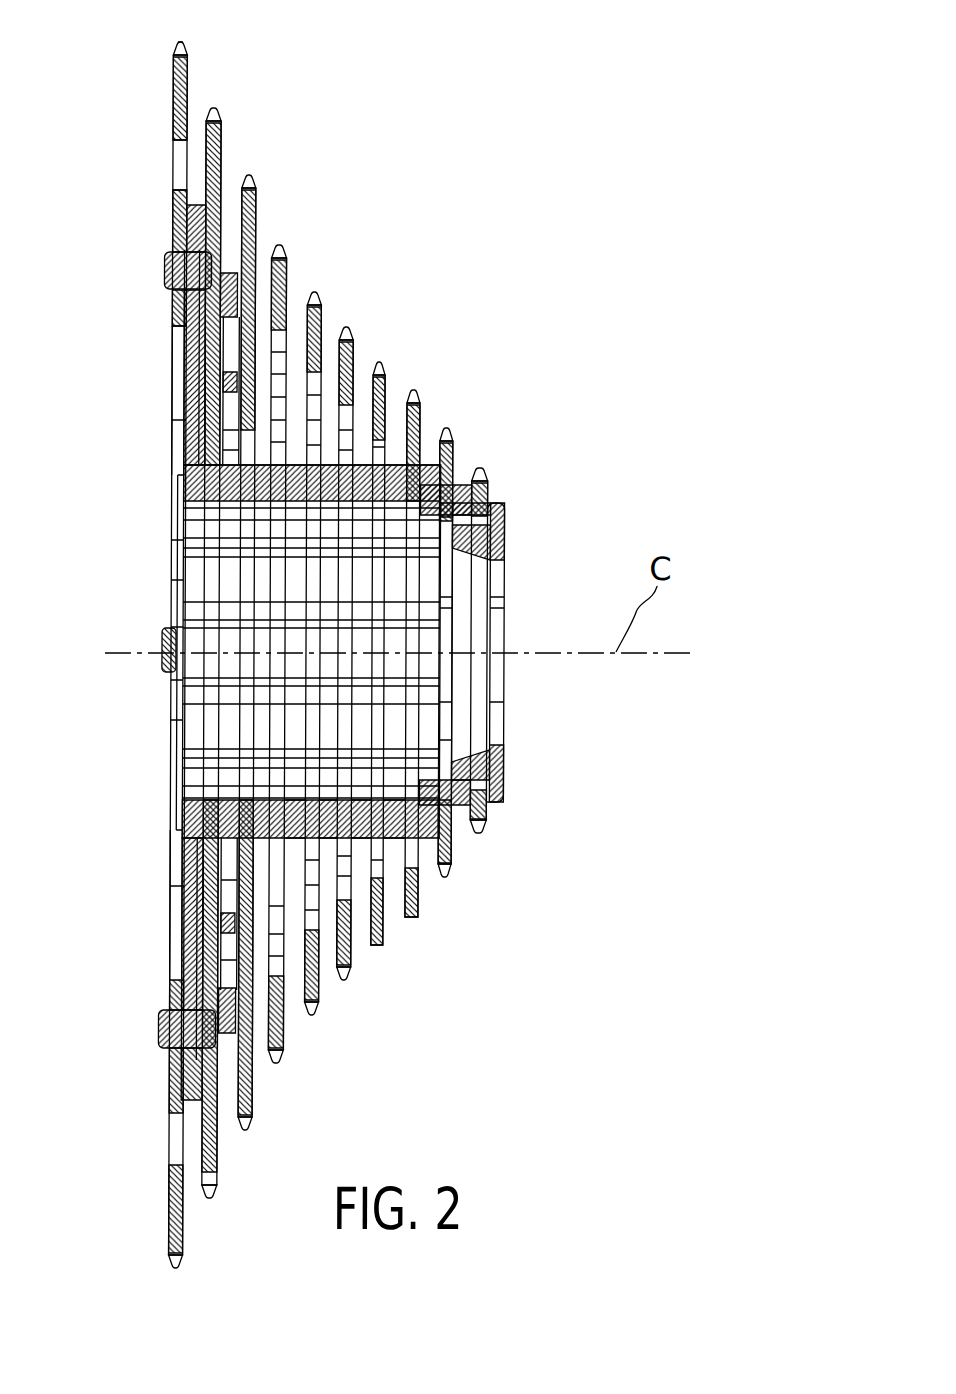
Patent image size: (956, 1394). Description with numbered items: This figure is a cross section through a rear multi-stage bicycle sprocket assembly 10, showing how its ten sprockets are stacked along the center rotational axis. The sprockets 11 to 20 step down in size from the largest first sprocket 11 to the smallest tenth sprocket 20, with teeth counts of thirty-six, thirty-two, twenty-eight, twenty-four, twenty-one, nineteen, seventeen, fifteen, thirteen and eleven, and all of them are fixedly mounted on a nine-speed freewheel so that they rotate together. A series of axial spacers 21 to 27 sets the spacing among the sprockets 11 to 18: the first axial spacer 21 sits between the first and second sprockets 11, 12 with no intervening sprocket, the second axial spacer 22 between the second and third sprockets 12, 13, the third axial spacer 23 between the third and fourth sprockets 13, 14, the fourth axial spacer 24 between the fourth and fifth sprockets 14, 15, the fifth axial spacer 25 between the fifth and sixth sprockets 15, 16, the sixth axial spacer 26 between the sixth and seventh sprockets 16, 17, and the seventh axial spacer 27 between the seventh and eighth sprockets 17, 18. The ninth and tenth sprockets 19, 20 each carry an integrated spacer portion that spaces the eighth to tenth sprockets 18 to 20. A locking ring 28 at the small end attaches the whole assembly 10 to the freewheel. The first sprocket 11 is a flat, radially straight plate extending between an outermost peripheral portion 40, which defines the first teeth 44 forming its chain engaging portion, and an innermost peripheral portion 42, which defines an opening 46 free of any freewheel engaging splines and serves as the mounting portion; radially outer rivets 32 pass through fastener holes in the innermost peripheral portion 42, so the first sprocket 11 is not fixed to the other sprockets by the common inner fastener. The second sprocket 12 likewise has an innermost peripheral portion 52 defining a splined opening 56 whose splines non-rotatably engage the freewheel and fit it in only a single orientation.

The bicycle sprocket assembly 10 is at (456, 124).
The first sprocket 11 is at (192, 66).
The second sprocket 12 is at (224, 138).
The third sprocket 13 is at (258, 207).
The fourth sprocket 14 is at (290, 270).
The fifth sprocket 15 is at (325, 310).
The sixth sprocket 16 is at (356, 348).
The seventh sprocket 17 is at (389, 378).
The eighth sprocket 18 is at (423, 405).
The ninth sprocket 19 is at (456, 442).
The tenth sprocket 20 is at (492, 482).
The first axial spacer 21 is at (183, 940).
The second axial spacer 22 is at (215, 848).
The third axial spacer 23 is at (263, 800).
The fourth axial spacer 24 is at (295, 840).
The fifth axial spacer 25 is at (330, 840).
The sixth axial spacer 26 is at (358, 840).
The seventh axial spacer 27 is at (395, 840).
The locking ring 28 is at (507, 535).
The outer rivets 32 is at (163, 268).
The outermost peripheral portion 40 is at (172, 84).
The innermost peripheral portion 42 is at (172, 316).
The first teeth 44 is at (178, 44).
The opening 46 is at (170, 350).
The innermost peripheral portion 52 is at (195, 470).
The splined opening 56 is at (212, 518).